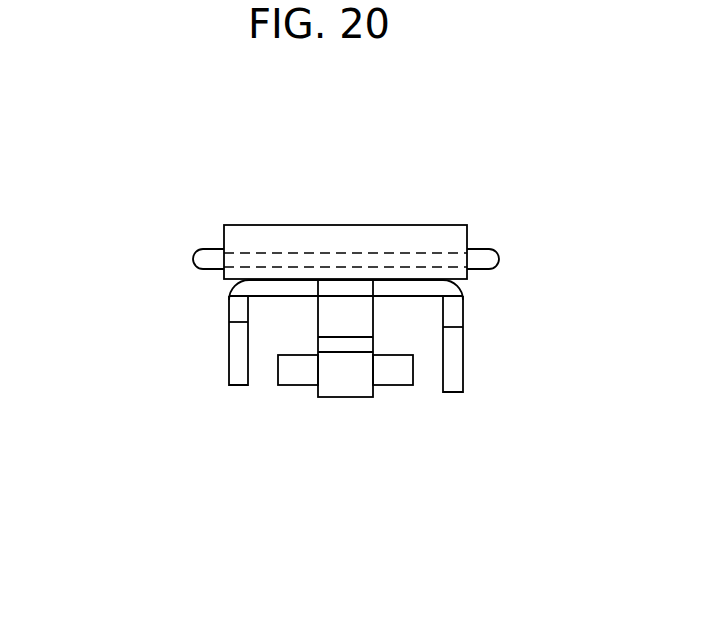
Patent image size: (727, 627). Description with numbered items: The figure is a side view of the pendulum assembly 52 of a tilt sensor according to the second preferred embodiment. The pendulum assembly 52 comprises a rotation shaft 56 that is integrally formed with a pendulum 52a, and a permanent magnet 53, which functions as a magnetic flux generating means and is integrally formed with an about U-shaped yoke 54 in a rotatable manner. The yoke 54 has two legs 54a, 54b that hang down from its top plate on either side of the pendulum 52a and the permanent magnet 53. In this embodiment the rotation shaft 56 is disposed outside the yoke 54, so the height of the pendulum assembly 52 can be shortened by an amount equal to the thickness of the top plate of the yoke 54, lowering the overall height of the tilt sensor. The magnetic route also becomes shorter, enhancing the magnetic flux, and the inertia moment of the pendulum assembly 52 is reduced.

The pendulum assembly 52 is at (265, 208).
The pendulum 52a is at (345, 385).
The permanent magnet 53 is at (306, 378).
The yoke 54 is at (408, 290).
The yoke leg 54a is at (238, 362).
The yoke leg 54b is at (457, 365).
The rotation shaft 56 is at (192, 253).